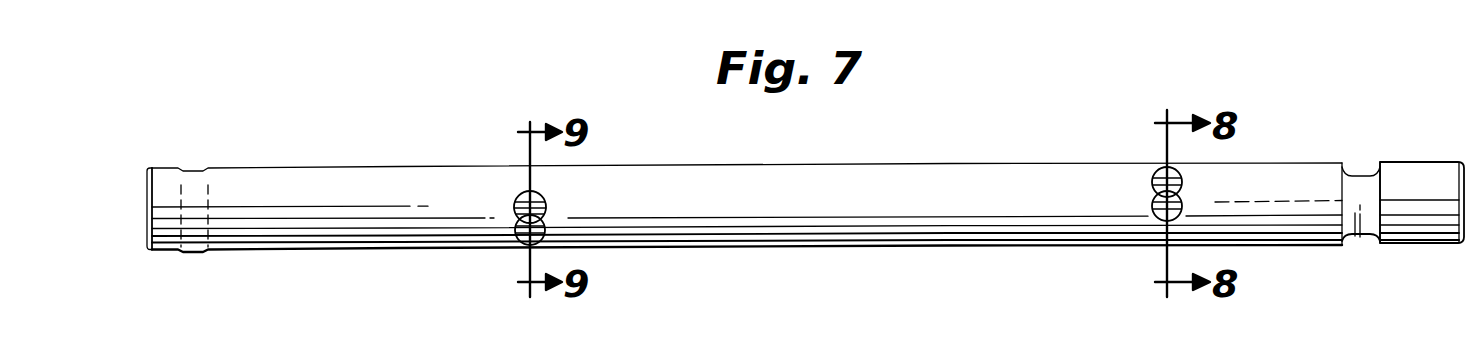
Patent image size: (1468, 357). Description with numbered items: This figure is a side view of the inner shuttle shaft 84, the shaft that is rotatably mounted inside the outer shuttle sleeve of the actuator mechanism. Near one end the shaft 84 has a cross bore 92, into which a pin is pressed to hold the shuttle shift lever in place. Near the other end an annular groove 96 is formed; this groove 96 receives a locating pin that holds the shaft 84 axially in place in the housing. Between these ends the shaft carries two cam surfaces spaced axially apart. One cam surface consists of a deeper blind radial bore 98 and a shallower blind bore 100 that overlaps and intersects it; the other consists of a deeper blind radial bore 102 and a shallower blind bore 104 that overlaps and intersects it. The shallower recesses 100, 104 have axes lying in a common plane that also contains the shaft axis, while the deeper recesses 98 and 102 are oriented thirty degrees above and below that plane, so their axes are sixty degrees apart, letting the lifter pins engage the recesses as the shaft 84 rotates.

The inner shuttle shaft 84 is at (764, 165).
The cross bore 92 is at (208, 192).
The annular groove 96 is at (1362, 175).
The deeper blind radial bore 98 is at (1152, 172).
The shallower blind bore 100 is at (1152, 210).
The deeper blind radial bore 102 is at (548, 233).
The shallower blind bore 104 is at (514, 200).